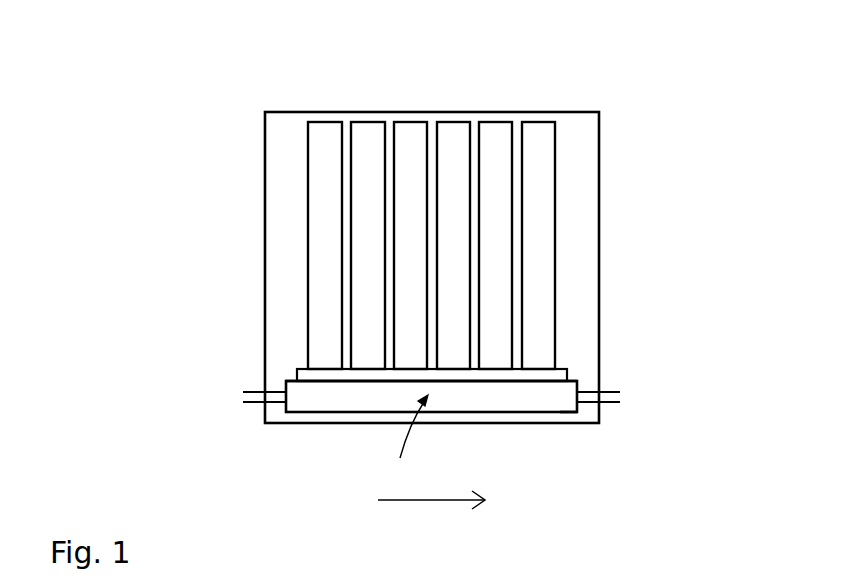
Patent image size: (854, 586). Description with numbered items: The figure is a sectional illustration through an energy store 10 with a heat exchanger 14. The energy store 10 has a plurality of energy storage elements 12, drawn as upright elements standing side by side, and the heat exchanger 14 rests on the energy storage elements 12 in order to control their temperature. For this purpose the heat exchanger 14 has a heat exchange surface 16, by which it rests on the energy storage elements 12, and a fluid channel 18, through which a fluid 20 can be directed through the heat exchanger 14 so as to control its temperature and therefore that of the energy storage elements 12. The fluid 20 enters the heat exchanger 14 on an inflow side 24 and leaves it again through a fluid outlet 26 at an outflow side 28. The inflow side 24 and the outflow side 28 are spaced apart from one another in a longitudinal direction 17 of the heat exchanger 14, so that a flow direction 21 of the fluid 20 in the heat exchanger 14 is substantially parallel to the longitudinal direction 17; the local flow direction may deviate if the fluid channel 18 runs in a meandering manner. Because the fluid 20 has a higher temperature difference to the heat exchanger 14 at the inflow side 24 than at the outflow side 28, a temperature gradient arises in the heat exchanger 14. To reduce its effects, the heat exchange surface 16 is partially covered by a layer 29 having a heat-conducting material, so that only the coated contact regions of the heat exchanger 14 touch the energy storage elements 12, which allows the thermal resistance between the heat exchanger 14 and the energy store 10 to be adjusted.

The energy store 10 is at (622, 98).
The energy storage elements 12 is at (411, 130).
The heat exchanger 14 is at (523, 400).
The heat exchange surface 16 is at (569, 375).
The longitudinal direction 17 is at (433, 522).
The fluid channel 18 is at (343, 400).
The fluid 20 is at (403, 441).
The flow direction 21 is at (433, 522).
The inflow side 24 is at (285, 408).
The fluid outlet 26 is at (612, 393).
The outflow side 28 is at (577, 408).
The layer 29 is at (327, 373).